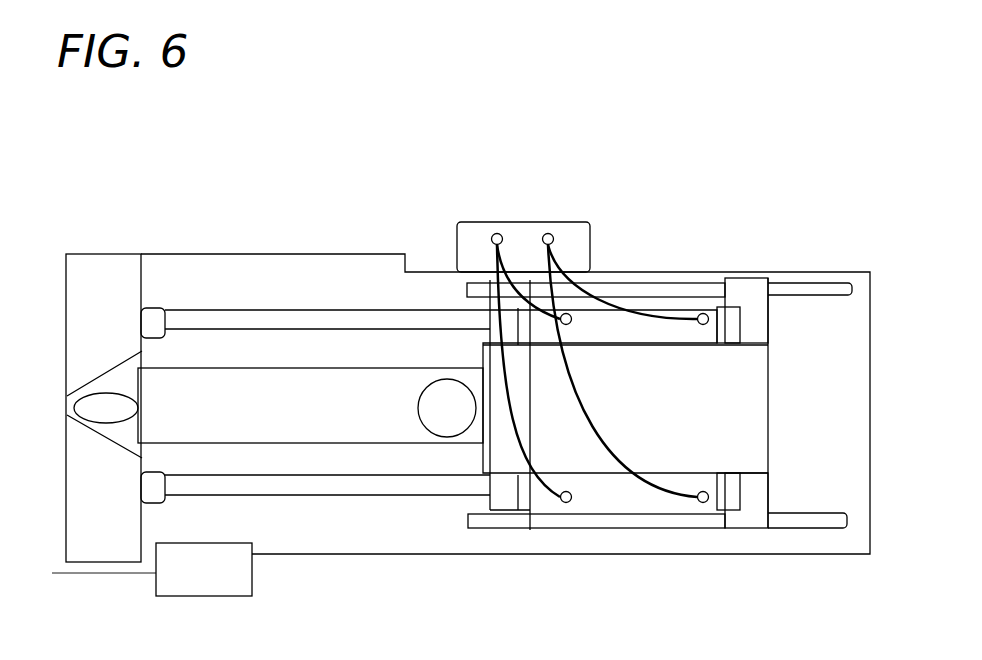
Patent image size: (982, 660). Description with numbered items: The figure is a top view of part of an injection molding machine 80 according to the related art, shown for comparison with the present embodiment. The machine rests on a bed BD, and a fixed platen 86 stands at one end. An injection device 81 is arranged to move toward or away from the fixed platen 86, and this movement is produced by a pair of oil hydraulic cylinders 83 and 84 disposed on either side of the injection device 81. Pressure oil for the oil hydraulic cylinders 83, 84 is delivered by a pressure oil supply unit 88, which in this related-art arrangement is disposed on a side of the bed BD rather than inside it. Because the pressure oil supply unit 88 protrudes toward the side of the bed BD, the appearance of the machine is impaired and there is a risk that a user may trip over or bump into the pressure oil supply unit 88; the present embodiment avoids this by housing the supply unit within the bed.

The injection molding machine 80 is at (785, 210).
The bed BD is at (272, 254).
The fixed platen 86 is at (112, 254).
The injection device 81 is at (355, 447).
The pressure oil supply unit 88 is at (480, 222).
The oil hydraulic cylinder 83 is at (660, 335).
The oil hydraulic cylinder 84 is at (620, 503).